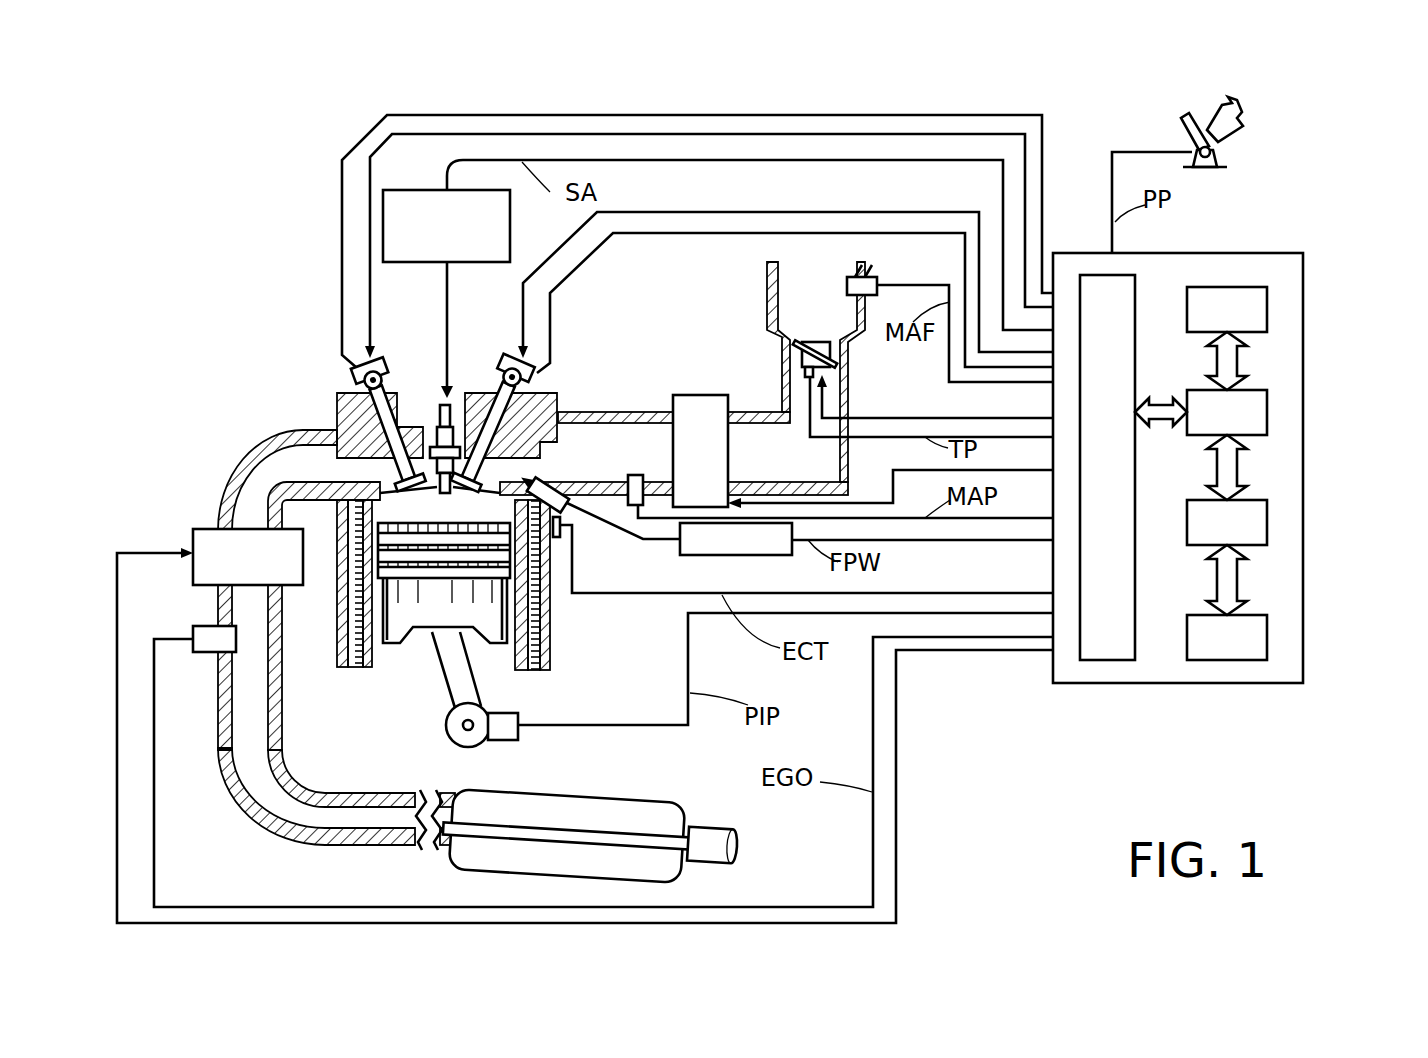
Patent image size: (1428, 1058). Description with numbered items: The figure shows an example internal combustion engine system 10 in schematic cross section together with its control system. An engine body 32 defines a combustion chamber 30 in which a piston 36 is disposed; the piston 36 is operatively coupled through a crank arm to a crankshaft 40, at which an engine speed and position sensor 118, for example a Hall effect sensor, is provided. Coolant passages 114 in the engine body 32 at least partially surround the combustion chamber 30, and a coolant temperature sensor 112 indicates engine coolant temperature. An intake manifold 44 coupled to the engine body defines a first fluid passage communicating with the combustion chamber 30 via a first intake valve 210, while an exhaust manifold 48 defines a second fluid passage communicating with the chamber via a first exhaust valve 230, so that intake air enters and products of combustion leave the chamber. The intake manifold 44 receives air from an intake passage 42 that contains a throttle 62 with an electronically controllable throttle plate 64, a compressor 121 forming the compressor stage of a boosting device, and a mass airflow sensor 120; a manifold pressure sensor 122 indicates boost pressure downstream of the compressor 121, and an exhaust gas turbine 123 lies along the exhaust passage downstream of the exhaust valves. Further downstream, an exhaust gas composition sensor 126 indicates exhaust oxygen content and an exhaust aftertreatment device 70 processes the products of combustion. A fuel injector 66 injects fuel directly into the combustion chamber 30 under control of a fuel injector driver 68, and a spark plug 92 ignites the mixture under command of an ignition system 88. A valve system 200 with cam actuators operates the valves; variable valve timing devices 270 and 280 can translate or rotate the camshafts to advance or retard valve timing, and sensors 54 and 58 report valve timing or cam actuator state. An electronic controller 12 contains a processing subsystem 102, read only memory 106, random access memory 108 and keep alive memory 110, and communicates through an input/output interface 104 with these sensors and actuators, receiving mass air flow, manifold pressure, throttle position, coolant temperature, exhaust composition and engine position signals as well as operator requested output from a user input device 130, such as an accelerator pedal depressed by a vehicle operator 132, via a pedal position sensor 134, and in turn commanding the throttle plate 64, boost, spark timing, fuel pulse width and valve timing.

The internal combustion engine system 10 is at (1046, 761).
The electronic controller 12 is at (1290, 253).
The combustion chamber 30 is at (352, 612).
The engine body 32 is at (378, 652).
The piston 36 is at (428, 668).
The crankshaft 40 is at (458, 745).
The intake passage 42 is at (816, 372).
The intake manifold 44 is at (674, 453).
The exhaust manifold 48 is at (336, 640).
The sensor 54 is at (540, 378).
The sensor 58 is at (356, 373).
The throttle 62 is at (832, 348).
The throttle plate 64 is at (800, 345).
The fuel injector 66 is at (567, 503).
The fuel injector driver 68 is at (712, 556).
The exhaust aftertreatment device 70 is at (645, 795).
The ignition system 88 is at (398, 190).
The spark plug 92 is at (447, 388).
The processing subsystem (CPU) 102 is at (1267, 405).
The input/output (I/O) interface 104 is at (1137, 285).
The read only memory (ROM) 106 is at (1267, 305).
The random access memory (RAM) 108 is at (1267, 518).
The keep alive memory (KAM) 110 is at (1267, 633).
The coolant temperature sensor 112 is at (561, 537).
The coolant passages 114 is at (546, 628).
The engine speed and position sensor 118 is at (505, 742).
The mass airflow sensor 120 is at (870, 280).
The compressor 121 is at (700, 451).
The manifold pressure sensor 122 is at (642, 475).
The exhaust gas turbine 123 is at (248, 557).
The exhaust gas composition sensor 126 is at (205, 626).
The user input device 130 is at (1182, 125).
The vehicle operator 132 is at (1238, 112).
The sensor 134 is at (1225, 160).
The valve system 200 is at (306, 300).
The first intake valve 210 is at (503, 480).
The first exhaust valve 230 is at (405, 476).
The variable valve timing device 270 is at (500, 365).
The variable valve timing device 280 is at (388, 365).